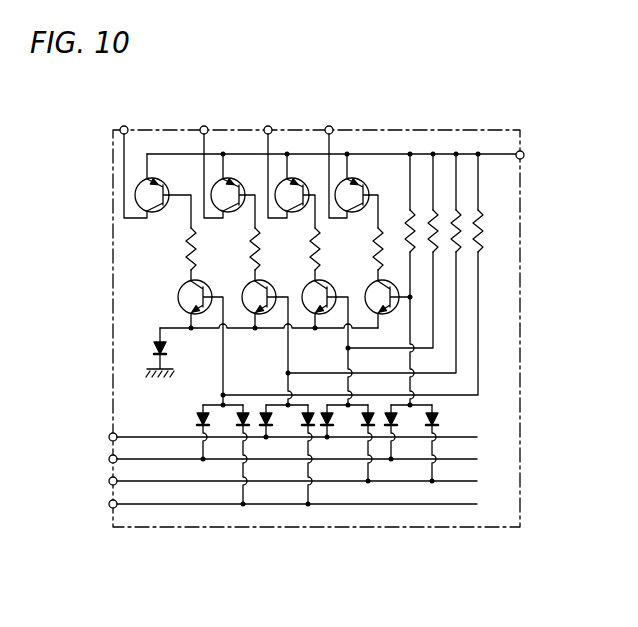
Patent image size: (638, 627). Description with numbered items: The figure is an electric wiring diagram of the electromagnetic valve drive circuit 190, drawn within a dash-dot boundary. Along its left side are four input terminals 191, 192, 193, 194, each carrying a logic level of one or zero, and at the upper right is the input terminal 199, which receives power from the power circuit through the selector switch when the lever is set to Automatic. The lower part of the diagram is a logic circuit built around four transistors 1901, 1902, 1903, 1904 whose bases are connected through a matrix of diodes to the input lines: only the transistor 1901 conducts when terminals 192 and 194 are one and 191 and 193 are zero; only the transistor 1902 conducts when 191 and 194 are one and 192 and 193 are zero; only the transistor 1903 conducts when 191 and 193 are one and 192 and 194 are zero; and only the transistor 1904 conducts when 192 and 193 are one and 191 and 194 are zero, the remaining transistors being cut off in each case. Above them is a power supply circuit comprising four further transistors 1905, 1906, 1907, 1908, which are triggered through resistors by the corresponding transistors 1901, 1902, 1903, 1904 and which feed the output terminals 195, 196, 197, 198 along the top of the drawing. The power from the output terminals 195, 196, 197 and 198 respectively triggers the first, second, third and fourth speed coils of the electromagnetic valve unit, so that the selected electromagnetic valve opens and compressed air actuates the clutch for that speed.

The electromagnetic valve drive circuit 190 is at (246, 528).
The input terminal 191 is at (110, 434).
The input terminal 192 is at (110, 458).
The input terminal 193 is at (109, 481).
The input terminal 194 is at (110, 505).
The output terminal 195 is at (124, 126).
The output terminal 196 is at (204, 126).
The output terminal 197 is at (268, 126).
The output terminal 198 is at (330, 126).
The input terminal 199 is at (521, 150).
The transistor 1901 is at (178, 297).
The transistor 1902 is at (252, 282).
The transistor 1903 is at (335, 284).
The transistor 1904 is at (394, 310).
The transistor 1905 is at (135, 194).
The transistor 1906 is at (232, 179).
The transistor 1907 is at (294, 179).
The transistor 1908 is at (362, 182).